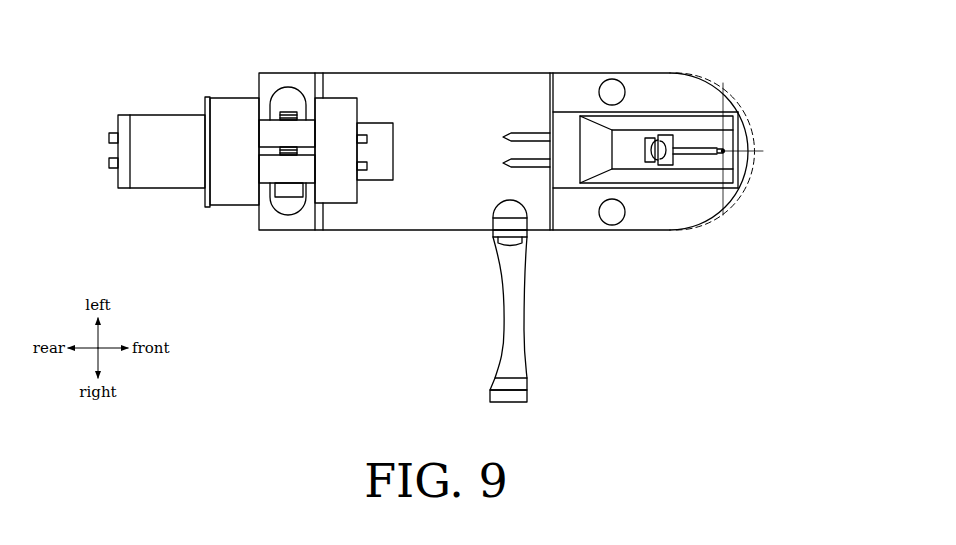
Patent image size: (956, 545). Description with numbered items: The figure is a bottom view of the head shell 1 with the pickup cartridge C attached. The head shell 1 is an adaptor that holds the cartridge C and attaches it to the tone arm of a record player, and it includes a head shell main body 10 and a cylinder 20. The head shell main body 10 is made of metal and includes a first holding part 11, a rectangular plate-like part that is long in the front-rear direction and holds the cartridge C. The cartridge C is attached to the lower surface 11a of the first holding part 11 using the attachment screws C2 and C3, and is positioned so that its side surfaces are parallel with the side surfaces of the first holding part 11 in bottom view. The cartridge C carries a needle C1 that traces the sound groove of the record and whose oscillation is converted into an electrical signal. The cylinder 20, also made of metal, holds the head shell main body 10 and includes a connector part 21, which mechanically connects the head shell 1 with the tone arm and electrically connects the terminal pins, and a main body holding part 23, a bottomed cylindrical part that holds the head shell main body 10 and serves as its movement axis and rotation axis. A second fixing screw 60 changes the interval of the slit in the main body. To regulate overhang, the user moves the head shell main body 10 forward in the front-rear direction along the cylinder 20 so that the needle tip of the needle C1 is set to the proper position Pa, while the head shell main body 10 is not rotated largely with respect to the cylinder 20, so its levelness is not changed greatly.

The head shell 1 is at (744, 71).
The head shell main body 10 is at (447, 232).
The first holding part 11 is at (470, 72).
The lower surface 11a is at (461, 163).
The cylinder 20 is at (187, 191).
The connector part 21 is at (168, 113).
The main body holding part 23 is at (243, 97).
The second fixing screw 60 is at (290, 197).
The pickup cartridge C is at (656, 233).
The needle C1 is at (722, 150).
The attachment screw C2 is at (612, 92).
The attachment screw C3 is at (612, 212).
The proper position Pa is at (728, 149).